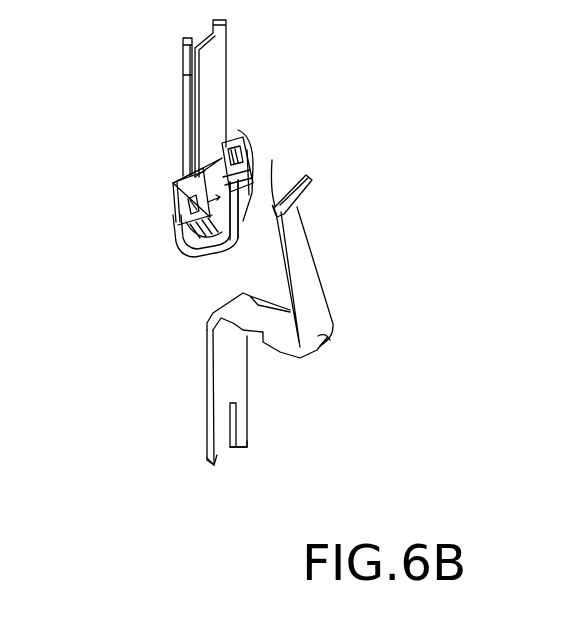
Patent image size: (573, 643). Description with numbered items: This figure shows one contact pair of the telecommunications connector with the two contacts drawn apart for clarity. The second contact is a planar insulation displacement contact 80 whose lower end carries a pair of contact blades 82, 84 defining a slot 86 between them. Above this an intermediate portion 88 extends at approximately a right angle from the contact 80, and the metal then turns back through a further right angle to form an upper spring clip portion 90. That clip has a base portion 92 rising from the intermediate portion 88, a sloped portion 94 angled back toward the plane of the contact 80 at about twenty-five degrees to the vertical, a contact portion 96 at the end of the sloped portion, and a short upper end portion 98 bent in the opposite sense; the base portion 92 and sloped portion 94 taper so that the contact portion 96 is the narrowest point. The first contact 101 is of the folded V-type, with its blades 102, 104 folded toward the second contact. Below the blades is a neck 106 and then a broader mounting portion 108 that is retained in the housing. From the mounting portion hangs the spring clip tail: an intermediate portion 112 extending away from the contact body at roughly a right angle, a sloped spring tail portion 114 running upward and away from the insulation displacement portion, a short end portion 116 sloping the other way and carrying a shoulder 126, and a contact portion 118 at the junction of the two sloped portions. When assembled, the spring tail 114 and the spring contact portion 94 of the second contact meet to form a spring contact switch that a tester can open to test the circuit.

The planar insulation displacement contact 80 is at (228, 405).
The contact blade 82 is at (215, 466).
The contact blade 84 is at (250, 444).
The slot 86 is at (232, 418).
The intermediate portion 88 is at (237, 300).
The upper spring clip portion 90 is at (336, 241).
The base portion 92 is at (310, 344).
The sloped portion 94 is at (300, 265).
The contact portion 96 is at (272, 160).
The short upper end portion 98 is at (306, 177).
The clip 101 is at (170, 233).
The blade 102 is at (182, 62).
The blade 104 is at (215, 55).
The neck 106 is at (178, 178).
The mounting portion 108 is at (168, 205).
The intermediate portion 112 is at (195, 249).
The spring tail 114 is at (241, 220).
The short end portion 116 is at (250, 147).
The contact portion 118 is at (182, 157).
The shoulder 126 is at (182, 112).